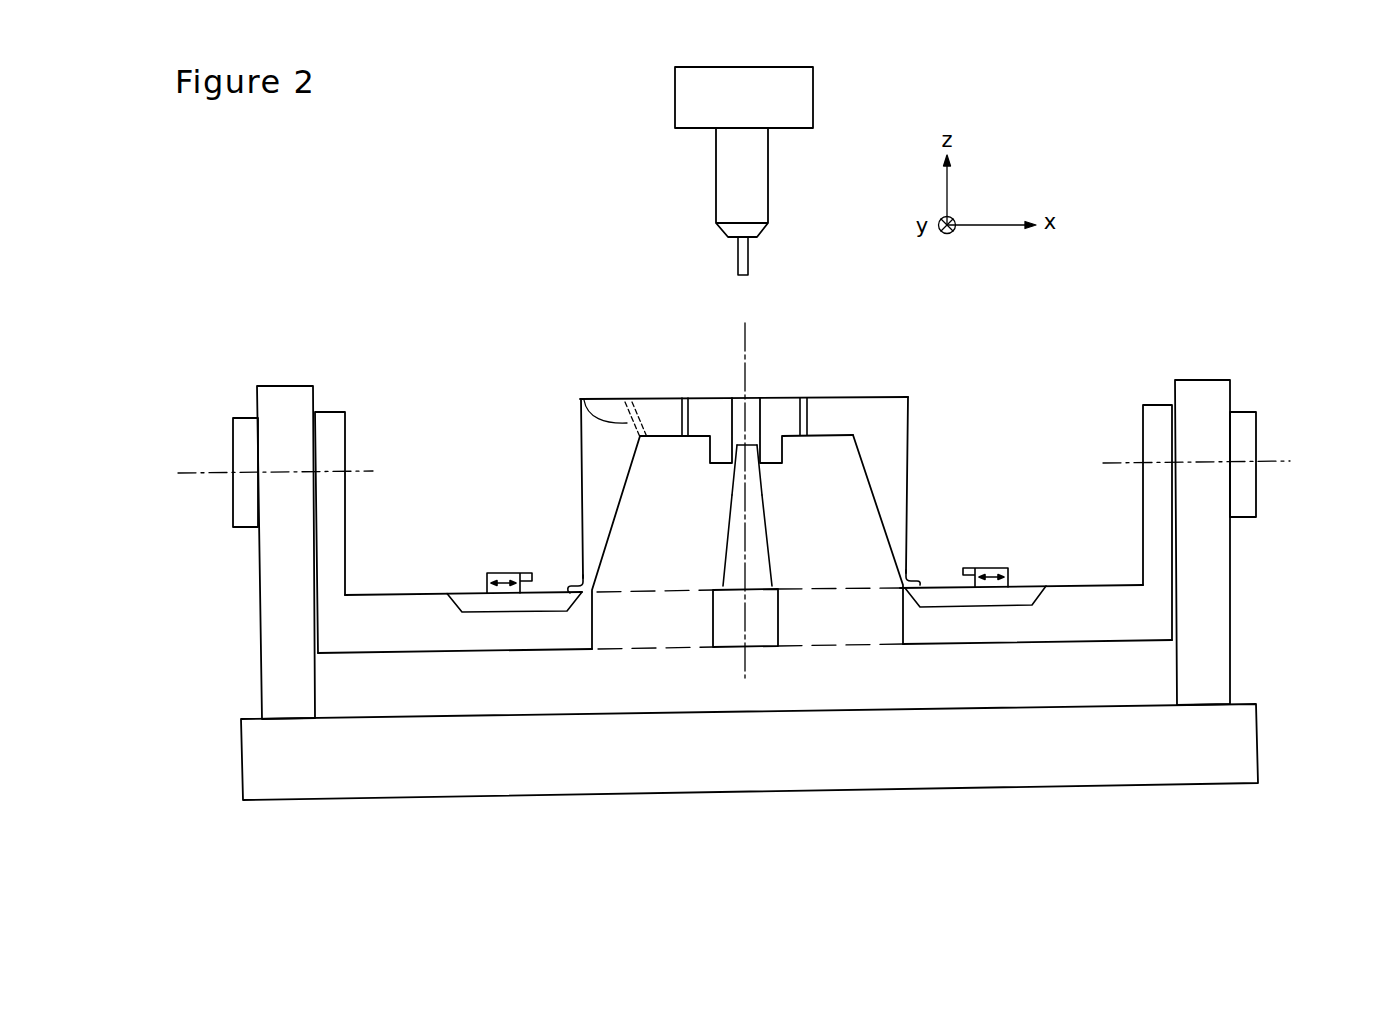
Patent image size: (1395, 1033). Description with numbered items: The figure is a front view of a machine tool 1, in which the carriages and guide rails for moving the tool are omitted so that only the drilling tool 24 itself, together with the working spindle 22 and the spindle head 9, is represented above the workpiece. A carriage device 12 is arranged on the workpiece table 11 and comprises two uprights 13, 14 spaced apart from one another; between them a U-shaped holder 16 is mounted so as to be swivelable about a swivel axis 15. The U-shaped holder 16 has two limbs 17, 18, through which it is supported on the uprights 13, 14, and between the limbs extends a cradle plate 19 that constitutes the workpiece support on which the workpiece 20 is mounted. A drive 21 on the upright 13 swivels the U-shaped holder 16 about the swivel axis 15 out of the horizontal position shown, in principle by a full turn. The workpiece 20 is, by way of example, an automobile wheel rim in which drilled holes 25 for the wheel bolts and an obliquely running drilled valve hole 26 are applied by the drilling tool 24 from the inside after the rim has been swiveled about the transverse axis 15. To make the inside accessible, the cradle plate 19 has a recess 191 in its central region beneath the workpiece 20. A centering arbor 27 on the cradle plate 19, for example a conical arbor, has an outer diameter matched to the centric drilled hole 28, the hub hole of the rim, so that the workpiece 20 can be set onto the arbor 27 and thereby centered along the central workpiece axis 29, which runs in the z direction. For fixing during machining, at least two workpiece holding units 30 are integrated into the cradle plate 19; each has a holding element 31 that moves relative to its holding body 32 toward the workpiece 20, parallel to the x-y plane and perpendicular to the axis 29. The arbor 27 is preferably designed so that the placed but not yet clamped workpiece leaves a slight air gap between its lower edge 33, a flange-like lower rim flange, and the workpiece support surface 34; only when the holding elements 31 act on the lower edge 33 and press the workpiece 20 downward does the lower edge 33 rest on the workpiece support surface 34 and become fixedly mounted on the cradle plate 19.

The machine tool 1 is at (1120, 300).
The spindle head 9 is at (698, 110).
The workpiece table 11 is at (1217, 748).
The carriage device 12 is at (318, 372).
The upright 13 is at (283, 640).
The upright 14 is at (1205, 617).
The swivel axis 15 is at (200, 472).
The U-shaped holder 16 is at (353, 407).
The limb 17 is at (330, 520).
The limb 18 is at (1158, 530).
The cradle plate 19 is at (383, 640).
The recess 191 is at (650, 623).
The workpiece 20 is at (880, 413).
The drive 21 is at (245, 505).
The working spindle 22 is at (738, 157).
The tool 24 is at (742, 249).
The drilled holes 25 is at (677, 417).
The drilled valve hole 26 is at (580, 397).
The centering arbor 27 is at (752, 528).
The centric drilled hole 28 is at (742, 407).
The central workpiece axis 29 is at (747, 352).
The workpiece holding unit 30 is at (472, 575).
The holding element 31 is at (510, 572).
The holding body 32 is at (507, 600).
The lower edge 33 is at (567, 575).
The workpiece support surface 34 is at (570, 593).